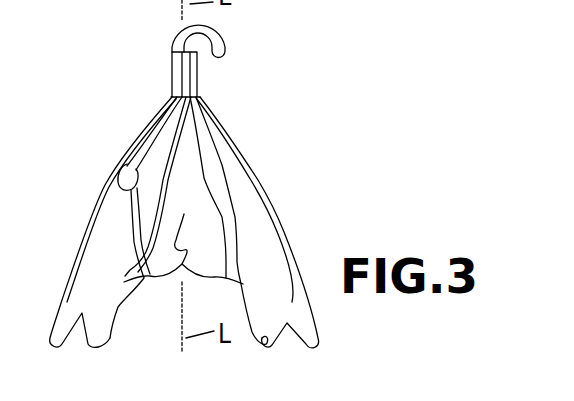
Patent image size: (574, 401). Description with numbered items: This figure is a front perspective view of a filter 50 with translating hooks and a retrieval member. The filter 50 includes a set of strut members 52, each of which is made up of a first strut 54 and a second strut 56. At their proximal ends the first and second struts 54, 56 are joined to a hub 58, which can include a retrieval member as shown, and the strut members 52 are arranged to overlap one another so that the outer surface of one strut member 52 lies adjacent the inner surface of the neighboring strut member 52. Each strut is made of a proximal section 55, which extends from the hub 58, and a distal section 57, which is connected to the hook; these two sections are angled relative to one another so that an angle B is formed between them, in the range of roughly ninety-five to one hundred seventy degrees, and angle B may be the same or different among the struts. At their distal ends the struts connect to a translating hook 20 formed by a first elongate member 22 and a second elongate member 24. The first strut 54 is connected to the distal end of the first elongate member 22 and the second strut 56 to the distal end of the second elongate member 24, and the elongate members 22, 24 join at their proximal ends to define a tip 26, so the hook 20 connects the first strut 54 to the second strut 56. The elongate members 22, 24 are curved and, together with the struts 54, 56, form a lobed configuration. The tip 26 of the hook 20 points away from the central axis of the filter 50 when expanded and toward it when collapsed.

The filter 50 is at (108, 136).
The strut member 52 is at (278, 177).
The first strut 54 is at (258, 253).
The proximal section 55 is at (125, 146).
The second strut 56 is at (276, 211).
The distal section 57 is at (82, 234).
The hub 58 is at (231, 47).
The angle B is at (128, 197).
The translating hook 20 is at (173, 284).
The first elongate member 22 is at (143, 278).
The second elongate member 24 is at (241, 282).
The tip 26 is at (183, 232).